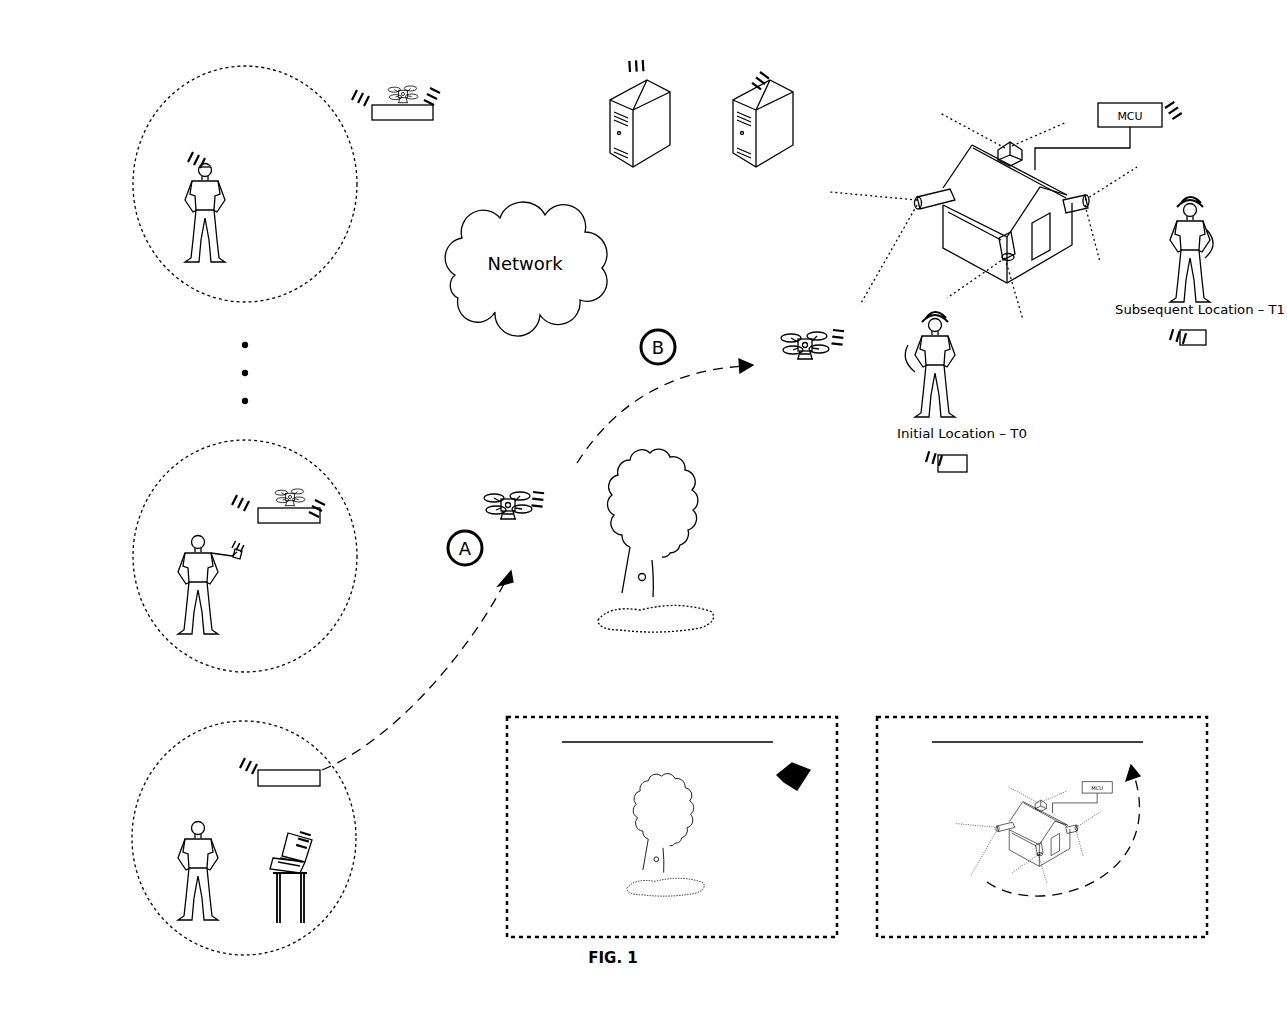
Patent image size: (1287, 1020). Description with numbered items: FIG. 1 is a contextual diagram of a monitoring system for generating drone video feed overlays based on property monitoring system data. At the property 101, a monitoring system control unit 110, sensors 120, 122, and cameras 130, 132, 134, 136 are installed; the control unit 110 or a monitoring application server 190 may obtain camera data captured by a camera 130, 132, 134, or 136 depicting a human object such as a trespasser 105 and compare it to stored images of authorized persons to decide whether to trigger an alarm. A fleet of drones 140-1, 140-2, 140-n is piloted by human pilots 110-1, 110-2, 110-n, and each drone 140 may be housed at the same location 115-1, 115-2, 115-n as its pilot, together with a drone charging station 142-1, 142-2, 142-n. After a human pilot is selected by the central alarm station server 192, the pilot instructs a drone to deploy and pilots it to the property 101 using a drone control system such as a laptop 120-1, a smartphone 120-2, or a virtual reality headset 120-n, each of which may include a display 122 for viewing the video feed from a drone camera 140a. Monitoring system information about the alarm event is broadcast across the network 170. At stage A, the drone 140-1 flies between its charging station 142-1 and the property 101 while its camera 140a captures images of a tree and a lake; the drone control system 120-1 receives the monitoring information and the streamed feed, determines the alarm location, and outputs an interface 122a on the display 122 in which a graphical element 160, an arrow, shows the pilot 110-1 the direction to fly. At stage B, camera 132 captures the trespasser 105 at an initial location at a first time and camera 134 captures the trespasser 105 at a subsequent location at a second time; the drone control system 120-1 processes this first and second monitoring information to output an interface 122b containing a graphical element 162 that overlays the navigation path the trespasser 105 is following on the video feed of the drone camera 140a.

The property 101 is at (940, 180).
The trespasser 105 is at (950, 380).
The monitoring system control unit 110 is at (1138, 103).
The human pilot 110-n is at (192, 190).
The human pilot 110-2 is at (186, 556).
The human pilot 110-1 is at (186, 840).
The location 115-n is at (172, 88).
The location 115-2 is at (172, 460).
The location 115-1 is at (172, 744).
The sensor 120 is at (953, 470).
The virtual reality headset 120-n is at (211, 167).
The smartphone 120-2 is at (242, 562).
The laptop 120-1 is at (275, 868).
The display 122 is at (1195, 345).
The interface 122a is at (518, 725).
The interface 122b is at (888, 725).
The camera 130 is at (920, 197).
The camera 132 is at (1005, 234).
The camera 134 is at (1072, 198).
The camera 136 is at (1000, 148).
The drone 140 is at (246, 546).
The drone 140-n is at (400, 86).
The drone 140-2 is at (286, 488).
The drone 140-1 is at (503, 488).
The drone camera 140a is at (505, 521).
The drone charging station 142-n is at (405, 118).
The drone charging station 142-2 is at (300, 524).
The drone charging station 142-1 is at (293, 787).
The graphical element 160 is at (779, 789).
The graphical element 162 is at (1130, 880).
The network 170 is at (190, 158).
The monitoring application server 190 is at (612, 102).
The central alarm station server 192 is at (735, 103).